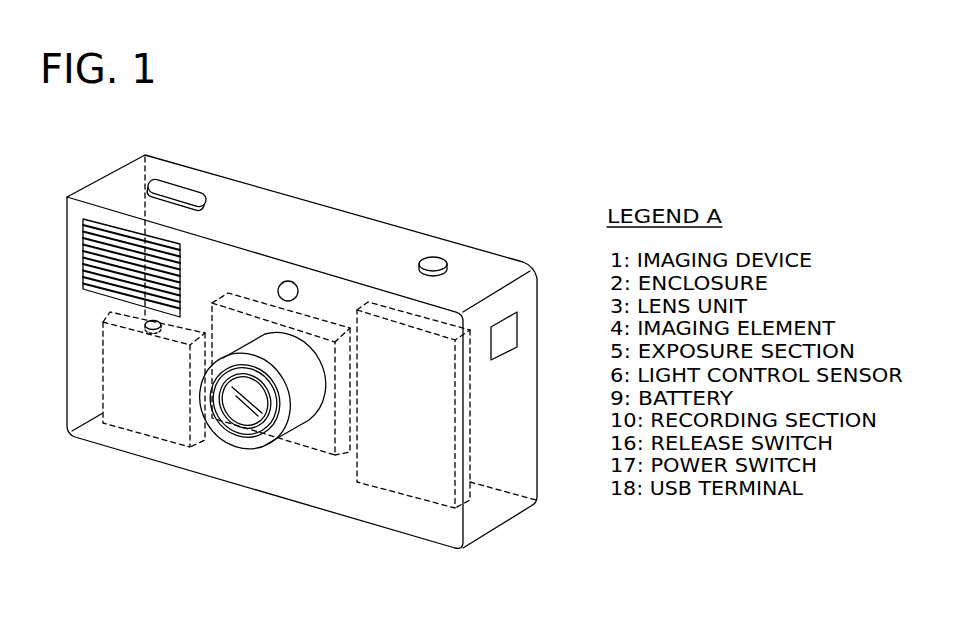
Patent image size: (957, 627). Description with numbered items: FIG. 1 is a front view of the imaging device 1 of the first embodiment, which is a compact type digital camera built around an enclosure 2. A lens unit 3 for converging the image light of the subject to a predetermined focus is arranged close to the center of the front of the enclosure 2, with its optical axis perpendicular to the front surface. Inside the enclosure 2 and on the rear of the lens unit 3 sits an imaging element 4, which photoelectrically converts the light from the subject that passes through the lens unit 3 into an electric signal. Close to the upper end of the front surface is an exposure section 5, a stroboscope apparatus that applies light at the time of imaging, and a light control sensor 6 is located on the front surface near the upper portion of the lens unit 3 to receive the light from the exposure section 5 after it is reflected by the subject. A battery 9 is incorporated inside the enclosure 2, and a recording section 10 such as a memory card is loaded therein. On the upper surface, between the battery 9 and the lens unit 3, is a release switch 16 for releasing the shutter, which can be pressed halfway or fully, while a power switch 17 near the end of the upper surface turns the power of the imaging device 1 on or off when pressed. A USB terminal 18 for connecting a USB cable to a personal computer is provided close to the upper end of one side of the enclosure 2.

The imaging device 1 is at (418, 156).
The enclosure 2 is at (390, 225).
The lens unit 3 is at (246, 413).
The imaging element 4 is at (318, 442).
The exposure section 5 is at (100, 240).
The light control sensor 6 is at (288, 281).
The battery 9 is at (117, 367).
The recording section 10 is at (443, 403).
The release switch 16 is at (177, 190).
The power switch 17 is at (435, 262).
The USB terminal 18 is at (510, 328).